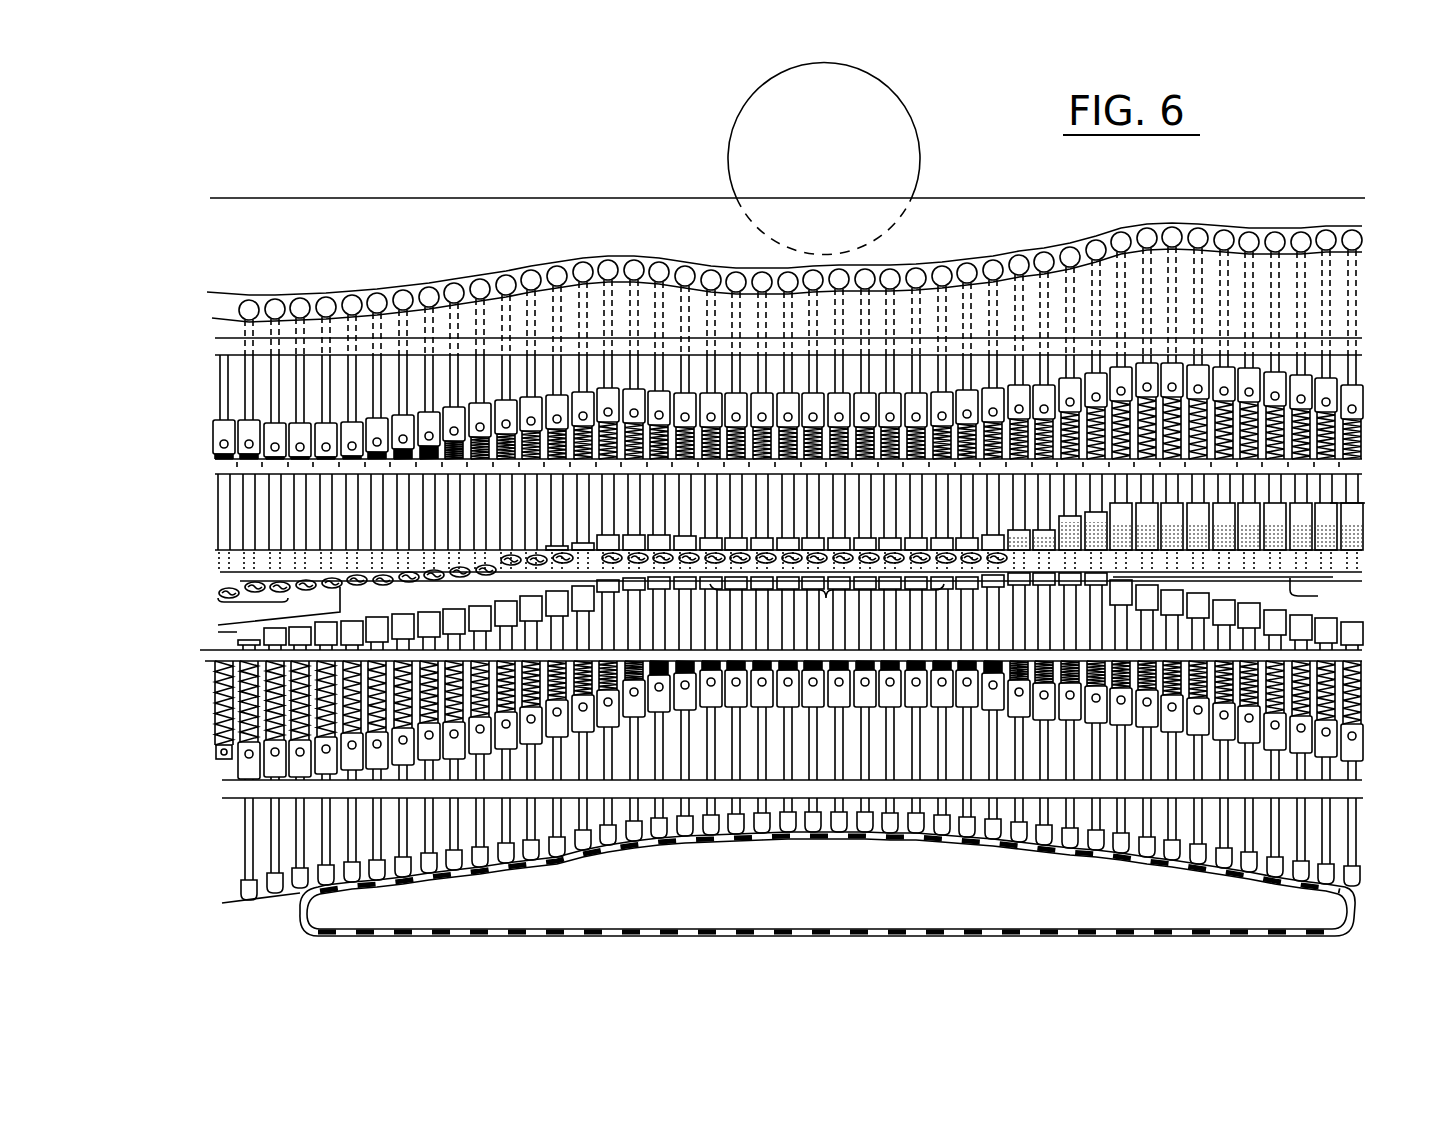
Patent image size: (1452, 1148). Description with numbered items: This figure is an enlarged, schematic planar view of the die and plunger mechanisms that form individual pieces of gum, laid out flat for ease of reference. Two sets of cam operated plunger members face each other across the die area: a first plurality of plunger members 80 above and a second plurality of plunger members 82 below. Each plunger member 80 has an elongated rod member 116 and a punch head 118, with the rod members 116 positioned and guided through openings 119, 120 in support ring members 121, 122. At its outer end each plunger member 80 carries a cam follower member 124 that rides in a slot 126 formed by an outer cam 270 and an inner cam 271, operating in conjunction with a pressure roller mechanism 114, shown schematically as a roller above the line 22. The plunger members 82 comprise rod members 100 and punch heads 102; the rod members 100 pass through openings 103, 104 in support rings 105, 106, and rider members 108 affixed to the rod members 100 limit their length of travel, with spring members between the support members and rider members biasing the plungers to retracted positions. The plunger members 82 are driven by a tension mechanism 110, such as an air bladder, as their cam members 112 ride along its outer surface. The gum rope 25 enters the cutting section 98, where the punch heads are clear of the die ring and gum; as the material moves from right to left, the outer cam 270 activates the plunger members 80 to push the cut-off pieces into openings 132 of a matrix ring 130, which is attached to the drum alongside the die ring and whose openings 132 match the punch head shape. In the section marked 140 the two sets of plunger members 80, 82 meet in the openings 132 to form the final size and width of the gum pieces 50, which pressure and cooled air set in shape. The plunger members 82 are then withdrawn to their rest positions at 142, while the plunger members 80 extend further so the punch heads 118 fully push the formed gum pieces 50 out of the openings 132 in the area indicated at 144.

The platen surface line 22 is at (1100, 198).
The gum rope 25 is at (1352, 543).
The gum pieces 50 is at (222, 592).
The cam operated plunger members 80 is at (1360, 279).
The cam operated plunger members 82 is at (1366, 752).
The cutting section 98 is at (1235, 595).
The rod members 100 is at (1352, 850).
The punch heads 102 is at (1355, 620).
The openings 103 is at (1358, 653).
The openings 104 is at (1355, 781).
The support ring 105 is at (1323, 652).
The support ring 106 is at (1305, 789).
The rider members 108 is at (1352, 735).
The tension mechanism 110 is at (1354, 912).
The cam members 112 is at (1352, 876).
The pressure roller mechanism 114 is at (732, 123).
The elongated rod member 116 is at (1358, 258).
The punch head 118 is at (1352, 505).
The openings 119 is at (1358, 338).
The openings 120 is at (1362, 459).
The support ring member 121 is at (1358, 355).
The support ring member 122 is at (1362, 474).
The cam follower member 124 is at (1356, 228).
The slot 126 is at (1050, 255).
The matrix ring 130 is at (1272, 572).
The openings 132 is at (1355, 579).
The forming section 140 is at (827, 608).
The rest positions 142 is at (260, 657).
The ejection area 144 is at (258, 603).
The outer cam 270 is at (266, 293).
The inner cam 271 is at (228, 318).